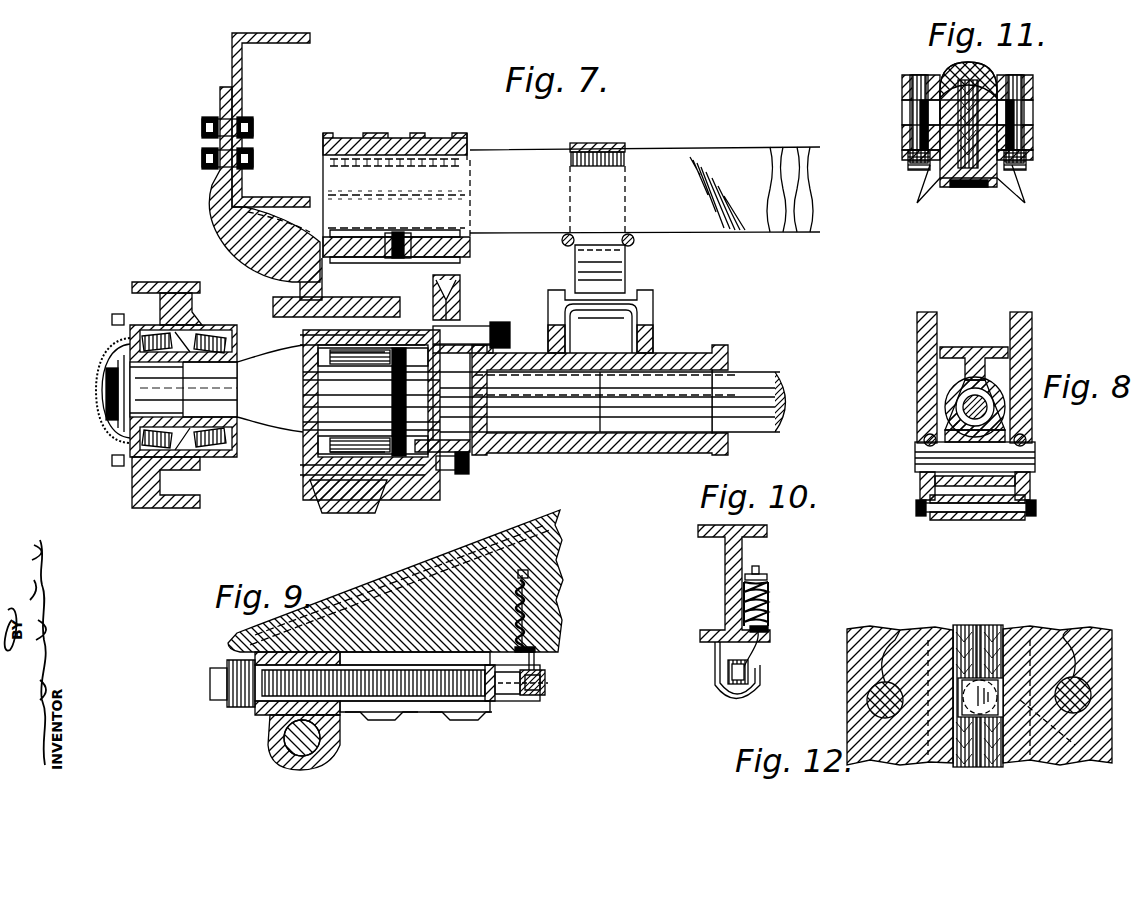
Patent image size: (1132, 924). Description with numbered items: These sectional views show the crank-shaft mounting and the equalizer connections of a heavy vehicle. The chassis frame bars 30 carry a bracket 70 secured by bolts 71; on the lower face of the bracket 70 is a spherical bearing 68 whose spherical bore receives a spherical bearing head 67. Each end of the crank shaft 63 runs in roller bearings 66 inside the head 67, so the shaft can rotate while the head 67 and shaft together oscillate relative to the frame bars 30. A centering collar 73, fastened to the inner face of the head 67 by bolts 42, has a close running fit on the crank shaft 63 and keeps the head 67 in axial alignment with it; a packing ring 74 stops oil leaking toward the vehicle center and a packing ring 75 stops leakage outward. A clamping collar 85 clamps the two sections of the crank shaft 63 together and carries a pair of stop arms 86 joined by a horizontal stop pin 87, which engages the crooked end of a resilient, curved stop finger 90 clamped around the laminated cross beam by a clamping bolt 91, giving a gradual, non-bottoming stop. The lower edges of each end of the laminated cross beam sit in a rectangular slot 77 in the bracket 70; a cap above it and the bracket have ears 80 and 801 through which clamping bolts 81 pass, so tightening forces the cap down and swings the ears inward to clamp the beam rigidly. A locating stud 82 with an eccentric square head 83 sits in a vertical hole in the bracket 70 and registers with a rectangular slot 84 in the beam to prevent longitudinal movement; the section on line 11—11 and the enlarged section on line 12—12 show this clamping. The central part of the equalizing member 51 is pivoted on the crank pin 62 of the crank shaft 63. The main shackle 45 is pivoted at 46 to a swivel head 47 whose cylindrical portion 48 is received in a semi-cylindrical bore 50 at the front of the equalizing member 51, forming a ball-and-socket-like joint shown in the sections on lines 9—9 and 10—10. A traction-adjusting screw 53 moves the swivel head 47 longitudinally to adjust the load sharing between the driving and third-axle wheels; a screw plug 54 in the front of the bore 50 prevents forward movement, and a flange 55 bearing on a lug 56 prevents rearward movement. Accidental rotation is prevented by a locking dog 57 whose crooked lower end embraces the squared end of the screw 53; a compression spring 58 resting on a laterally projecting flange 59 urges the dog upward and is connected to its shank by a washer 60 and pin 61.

In FIG. 7, the chassis frame bars 30 is at (232, 60).
In FIG. 7, the bracket 70 is at (236, 262).
In FIG. 11, the bracket 70 is at (958, 198).
In FIG. 12, the bracket 70 is at (1012, 632).
In FIG. 7, the bolts 71 is at (255, 128).
In FIG. 7, the equalizing member 51 is at (182, 282).
In FIG. 8, the equalizing member 51 is at (962, 366).
In FIG. 9, the equalizing member 51 is at (448, 548).
In FIG. 10, the equalizing member 51 is at (767, 530).
In FIG. 7, the crank pin 62 is at (146, 377).
In FIG. 7, the packing ring 75 is at (296, 388).
In FIG. 7, the spherical bearing 68 is at (290, 310).
In FIG. 7, the spherical bearing head 67 is at (310, 336).
In FIG. 7, the roller bearings 66 is at (362, 448).
In FIG. 7, the longitudinal cylindrical portion 48 is at (385, 120).
In FIG. 8, the longitudinal cylindrical portion 48 is at (990, 405).
In FIG. 11, the longitudinal cylindrical portion 48 is at (950, 62).
In FIG. 7, the horizontal transverse rectangular slot 77 is at (467, 152).
In FIG. 11, the horizontal transverse rectangular slot 77 is at (950, 108).
In FIG. 7, the clamping bolts 81 is at (405, 192).
In FIG. 11, the clamping bolts 81 is at (918, 172).
In FIG. 12, the clamping bolts 81 is at (900, 630).
In FIG. 7, the locating stud 82 is at (380, 232).
In FIG. 11, the locating stud 82 is at (955, 195).
In FIG. 12, the locating stud 82 is at (1075, 755).
In FIG. 7, the rectangular slot 84 is at (397, 234).
In FIG. 12, the rectangular slot 84 is at (958, 682).
In FIG. 7, the square head 83 is at (408, 236).
In FIG. 12, the square head 83 is at (970, 708).
In FIG. 7, the line 11— 11 is at (437, 135).
In FIG. 7, the pivot 46 is at (728, 158).
In FIG. 8, the pivot 46 is at (915, 455).
In FIG. 9, the pivot 46 is at (296, 752).
In FIG. 11, the pivot 46 is at (980, 75).
In FIG. 12, the pivot 46 is at (978, 626).
In FIG. 7, the resilient stop finger 90 is at (626, 276).
In FIG. 7, the clamping bolt 91 is at (636, 240).
In FIG. 7, the stop pin 87 is at (610, 300).
In FIG. 7, the stop arms 86 is at (626, 330).
In FIG. 7, the clamping collar 85 is at (605, 444).
In FIG. 7, the crank shaft 63 is at (778, 358).
In FIG. 7, the packing ring 74 is at (438, 370).
In FIG. 7, the bolt 42 is at (438, 330).
In FIG. 7, the centering collar 73 is at (436, 450).
In FIG. 7, the line 10— 10 is at (530, 560).
In FIG. 9, the line 10— 10 is at (530, 630).
In FIG. 8, the line 9— 9 is at (972, 330).
In FIG. 8, the main shackle 45 is at (917, 332).
In FIG. 8, the semi-cylindrical bore 50 is at (955, 405).
In FIG. 8, the traction-adjusting screw 53 is at (956, 436).
In FIG. 9, the traction-adjusting screw 53 is at (455, 700).
In FIG. 8, the swivel head 47 is at (1030, 482).
In FIG. 9, the swivel head 47 is at (328, 738).
In FIG. 9, the screw plug 54 is at (230, 708).
In FIG. 9, the flange 55 is at (490, 703).
In FIG. 9, the lug 56 is at (505, 700).
In FIG. 9, the locking dog 57 is at (542, 688).
In FIG. 10, the locking dog 57 is at (738, 688).
In FIG. 9, the compression spring 58 is at (540, 606).
In FIG. 10, the compression spring 58 is at (768, 600).
In FIG. 9, the washer 60 is at (572, 579).
In FIG. 10, the washer 60 is at (768, 577).
In FIG. 9, the laterally projecting flange 59 is at (535, 651).
In FIG. 10, the laterally projecting flange 59 is at (764, 634).
In FIG. 10, the pin 61 is at (760, 570).
In FIG. 11, the ears 80 is at (903, 95).
In FIG. 11, the ears 801 is at (908, 155).
In FIG. 12, the ears 801 is at (851, 700).
In FIG. 11, the line 12— 12 is at (905, 137).